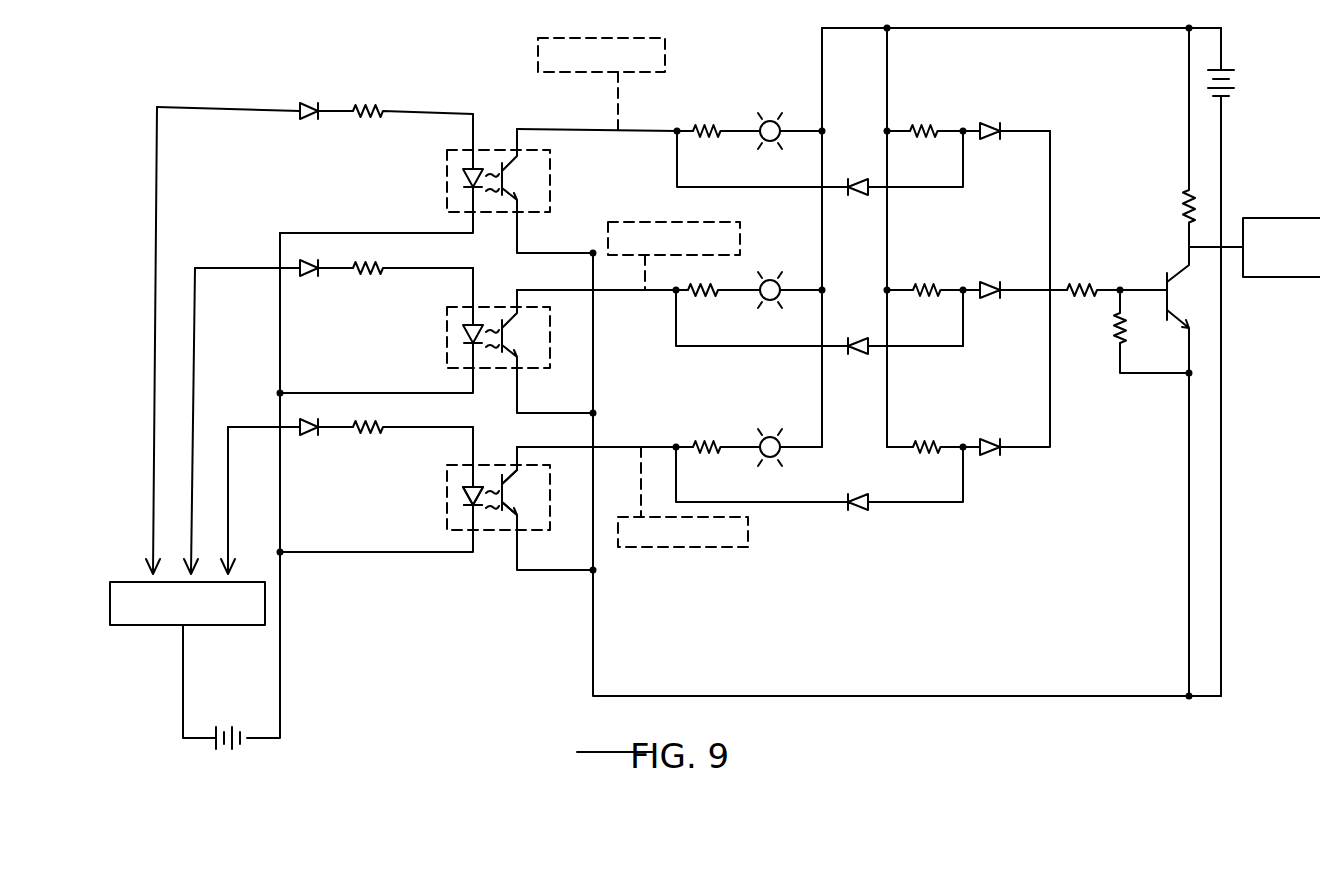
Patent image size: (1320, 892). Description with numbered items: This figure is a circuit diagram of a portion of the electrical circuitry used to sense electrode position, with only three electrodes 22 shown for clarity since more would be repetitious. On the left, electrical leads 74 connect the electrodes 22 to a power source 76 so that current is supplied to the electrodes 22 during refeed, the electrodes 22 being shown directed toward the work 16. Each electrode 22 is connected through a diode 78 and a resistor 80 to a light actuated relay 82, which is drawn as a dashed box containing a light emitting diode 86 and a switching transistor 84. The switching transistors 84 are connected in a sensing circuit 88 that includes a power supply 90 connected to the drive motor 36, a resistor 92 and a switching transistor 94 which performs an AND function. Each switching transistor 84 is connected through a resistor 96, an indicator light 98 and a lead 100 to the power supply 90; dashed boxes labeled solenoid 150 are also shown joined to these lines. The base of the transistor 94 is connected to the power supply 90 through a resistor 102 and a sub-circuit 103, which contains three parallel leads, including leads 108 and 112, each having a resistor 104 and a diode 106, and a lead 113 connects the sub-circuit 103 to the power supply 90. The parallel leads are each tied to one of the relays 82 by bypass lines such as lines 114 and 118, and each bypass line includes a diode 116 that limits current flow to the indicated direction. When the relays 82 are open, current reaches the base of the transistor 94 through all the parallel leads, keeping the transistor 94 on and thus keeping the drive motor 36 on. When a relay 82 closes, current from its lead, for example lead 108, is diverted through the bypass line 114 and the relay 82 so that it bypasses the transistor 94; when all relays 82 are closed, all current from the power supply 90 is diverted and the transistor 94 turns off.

The work 16 is at (144, 627).
The electrode 22 is at (156, 376).
The drive motor 36 is at (1276, 277).
The electrical lead 74 is at (262, 111).
The power source 76 is at (206, 744).
The diode 78 is at (314, 121).
The resistor 80 is at (373, 115).
The light actuated relay 82 is at (497, 222).
The switching transistor 84 is at (508, 490).
The light emitting diode 86 is at (458, 492).
The sensing circuit 88 is at (912, 708).
The power supply 90 is at (1242, 74).
The resistor 92 is at (1184, 205).
The switching transistor 94 is at (1174, 296).
The resistor 96 is at (711, 126).
The indicator light 98 is at (774, 120).
The lead 100 is at (830, 258).
The resistor 102 is at (1085, 284).
The sub-circuit 103 is at (1050, 160).
The resistor 104 is at (922, 284).
The diode 106 is at (990, 283).
The lead 108 is at (1023, 130).
The lead 112 is at (1010, 451).
The lead 113 is at (890, 78).
The bypass line 114 is at (926, 187).
The diode 116 is at (862, 179).
The bypass line 118 is at (926, 347).
The solenoid 150 is at (632, 38).